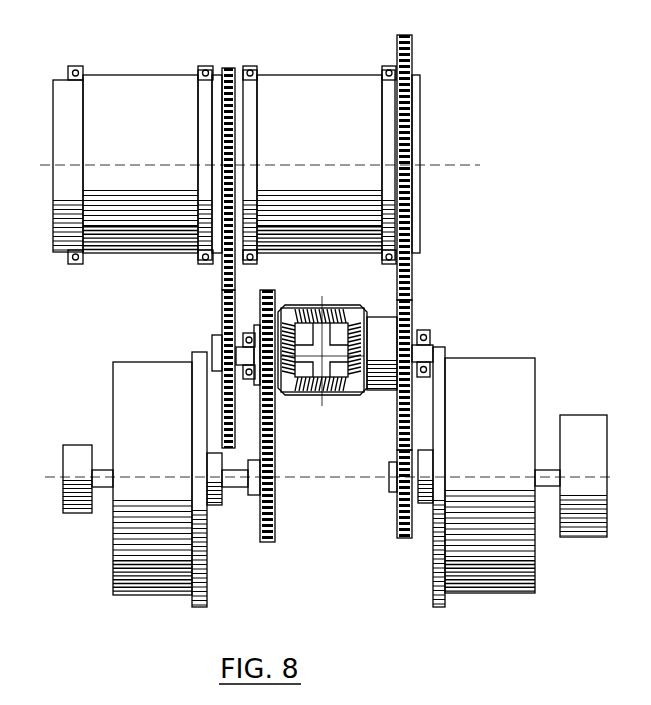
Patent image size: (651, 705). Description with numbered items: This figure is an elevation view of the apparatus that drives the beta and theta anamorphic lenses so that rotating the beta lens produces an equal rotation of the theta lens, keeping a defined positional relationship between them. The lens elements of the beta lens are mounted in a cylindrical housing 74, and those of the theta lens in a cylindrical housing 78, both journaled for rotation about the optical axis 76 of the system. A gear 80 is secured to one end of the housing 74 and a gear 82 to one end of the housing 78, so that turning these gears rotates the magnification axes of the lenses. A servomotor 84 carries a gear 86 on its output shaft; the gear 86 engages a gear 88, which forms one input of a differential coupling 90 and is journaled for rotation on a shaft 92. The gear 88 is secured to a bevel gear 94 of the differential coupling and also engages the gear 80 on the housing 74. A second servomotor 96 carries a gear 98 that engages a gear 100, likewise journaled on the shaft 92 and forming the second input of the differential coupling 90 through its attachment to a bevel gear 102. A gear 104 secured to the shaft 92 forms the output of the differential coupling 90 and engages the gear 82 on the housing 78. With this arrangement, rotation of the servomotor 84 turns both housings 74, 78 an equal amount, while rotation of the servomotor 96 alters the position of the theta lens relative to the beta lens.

The cylindrical housing 74 is at (292, 75).
The axis 76 is at (500, 162).
The cylindrical housing 78 is at (118, 75).
The gear 80 is at (402, 35).
The gear 82 is at (228, 68).
The servomotor 84 is at (480, 358).
The gear 86 is at (408, 539).
The gear 88 is at (398, 413).
The differential coupling 90 is at (288, 396).
The shaft 92 is at (424, 345).
The bevel gear 94 is at (372, 312).
The servomotor 96 is at (150, 362).
The gear 98 is at (270, 543).
The gear 100 is at (266, 290).
The bevel gear 102 is at (278, 308).
The gear 104 is at (222, 292).